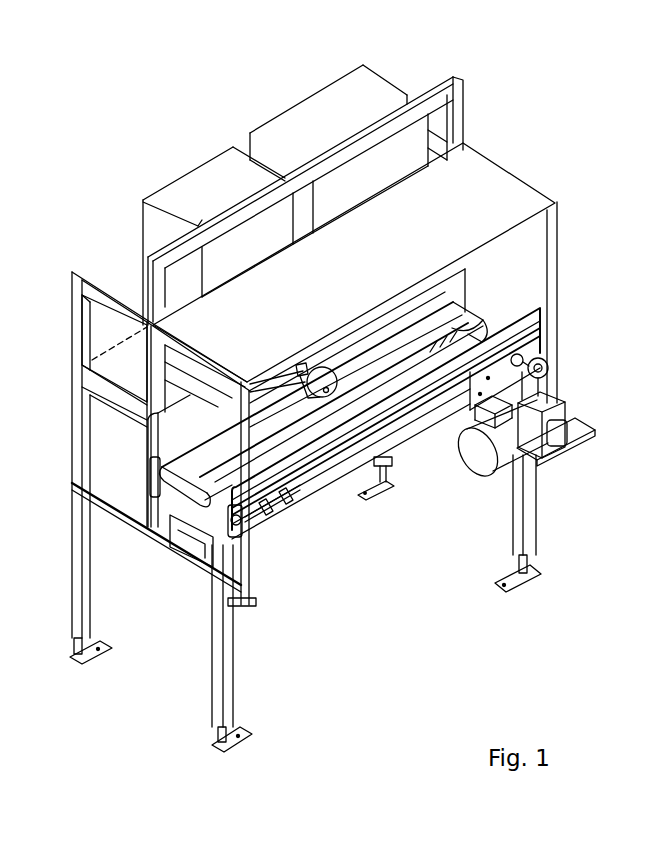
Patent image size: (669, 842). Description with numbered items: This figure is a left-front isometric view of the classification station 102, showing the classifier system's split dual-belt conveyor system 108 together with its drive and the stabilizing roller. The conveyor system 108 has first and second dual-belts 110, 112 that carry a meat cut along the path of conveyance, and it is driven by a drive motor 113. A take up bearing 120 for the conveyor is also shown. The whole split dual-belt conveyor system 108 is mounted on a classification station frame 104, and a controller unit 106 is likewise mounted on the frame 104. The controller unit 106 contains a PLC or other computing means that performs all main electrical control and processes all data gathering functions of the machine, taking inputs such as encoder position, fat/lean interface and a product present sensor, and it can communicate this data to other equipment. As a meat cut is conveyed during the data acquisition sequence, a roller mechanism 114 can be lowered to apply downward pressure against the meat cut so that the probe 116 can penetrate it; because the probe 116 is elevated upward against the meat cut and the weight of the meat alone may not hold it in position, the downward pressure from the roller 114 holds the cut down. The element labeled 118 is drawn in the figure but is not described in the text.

The classification station 102 is at (526, 127).
The classification station frame 104 is at (558, 203).
The controller unit 106 is at (330, 113).
The split dual-belt conveyor system 108 is at (192, 493).
The first dual-belt 110 is at (168, 487).
The second dual-belt 112 is at (210, 505).
The drive motor 113 is at (536, 452).
The roller mechanism 114 is at (312, 400).
The probe 116 is at (330, 405).
The drive pulley 118 is at (548, 366).
The take up bearing 120 is at (238, 535).